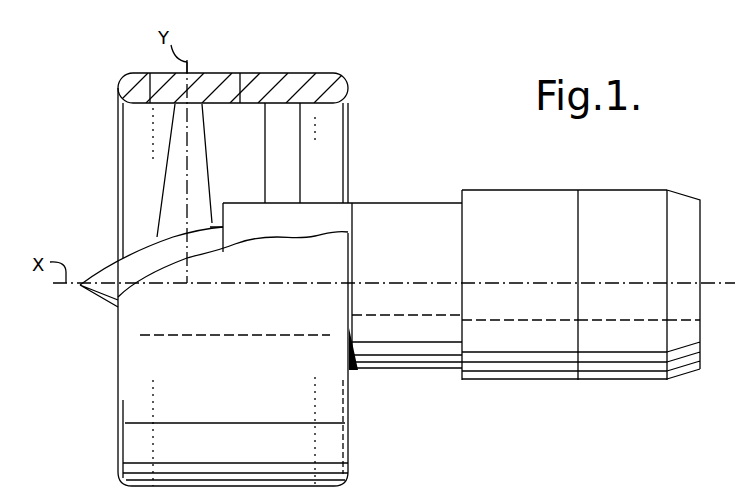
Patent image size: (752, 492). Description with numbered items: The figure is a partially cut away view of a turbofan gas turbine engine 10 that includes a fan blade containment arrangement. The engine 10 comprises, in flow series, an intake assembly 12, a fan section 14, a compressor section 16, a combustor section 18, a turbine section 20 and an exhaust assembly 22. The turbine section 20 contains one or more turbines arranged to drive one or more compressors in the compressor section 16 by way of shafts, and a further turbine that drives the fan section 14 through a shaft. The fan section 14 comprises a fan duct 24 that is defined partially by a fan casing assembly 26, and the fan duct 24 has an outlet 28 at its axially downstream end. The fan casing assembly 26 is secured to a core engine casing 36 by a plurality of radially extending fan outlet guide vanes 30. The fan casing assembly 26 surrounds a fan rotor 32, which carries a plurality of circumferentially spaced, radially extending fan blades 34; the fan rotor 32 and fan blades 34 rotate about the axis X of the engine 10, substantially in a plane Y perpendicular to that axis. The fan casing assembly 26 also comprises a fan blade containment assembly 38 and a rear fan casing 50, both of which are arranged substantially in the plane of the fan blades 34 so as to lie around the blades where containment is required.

The turbofan gas turbine engine 10 is at (442, 120).
The intake assembly 12 is at (128, 80).
The fan section 14 is at (112, 145).
The compressor section 16 is at (430, 230).
The combustor section 18 is at (512, 222).
The turbine section 20 is at (617, 218).
The exhaust assembly 22 is at (683, 218).
The fan duct 24 is at (250, 160).
The fan casing assembly 26 is at (206, 72).
The outlet 28 is at (351, 118).
The fan outlet guide vanes 30 is at (300, 145).
The fan rotor 32 is at (117, 267).
The fan blades 34 is at (168, 184).
The core engine casing 36 is at (408, 203).
The fan blade containment assembly 38 is at (168, 80).
The rear fan casing 50 is at (296, 84).